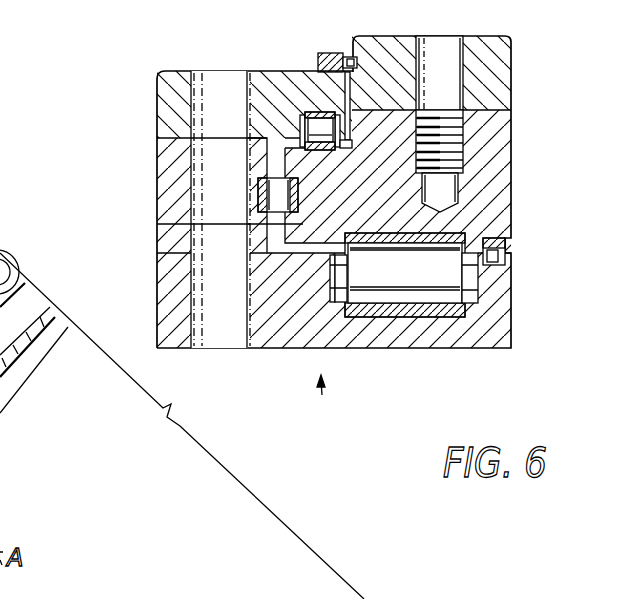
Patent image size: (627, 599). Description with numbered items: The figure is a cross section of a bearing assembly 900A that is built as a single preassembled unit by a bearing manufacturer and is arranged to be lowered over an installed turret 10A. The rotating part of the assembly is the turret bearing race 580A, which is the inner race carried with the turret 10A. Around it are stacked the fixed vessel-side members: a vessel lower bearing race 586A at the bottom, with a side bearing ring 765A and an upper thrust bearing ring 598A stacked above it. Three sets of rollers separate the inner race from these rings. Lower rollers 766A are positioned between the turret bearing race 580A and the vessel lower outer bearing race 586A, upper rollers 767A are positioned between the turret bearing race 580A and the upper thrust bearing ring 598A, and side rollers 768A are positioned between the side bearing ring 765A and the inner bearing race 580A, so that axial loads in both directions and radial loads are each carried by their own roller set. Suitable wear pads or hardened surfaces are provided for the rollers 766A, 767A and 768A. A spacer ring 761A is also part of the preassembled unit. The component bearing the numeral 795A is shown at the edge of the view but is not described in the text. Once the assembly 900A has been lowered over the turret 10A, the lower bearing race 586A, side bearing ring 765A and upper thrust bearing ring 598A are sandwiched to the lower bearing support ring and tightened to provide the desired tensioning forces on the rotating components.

The turret bearing race 580A is at (166, 224).
The upper thrust bearing ring 598A is at (166, 105).
The side bearing ring 765A is at (165, 157).
The vessel lower bearing race 586A is at (165, 293).
The side rollers 768A is at (258, 197).
The upper rollers 767A is at (305, 113).
The spacer ring 761A is at (353, 38).
The lower rollers 766A is at (408, 290).
The bearing assembly 900A is at (325, 408).
The shaft line 795A is at (182, 426).
The turret 10A is at (0, 432).